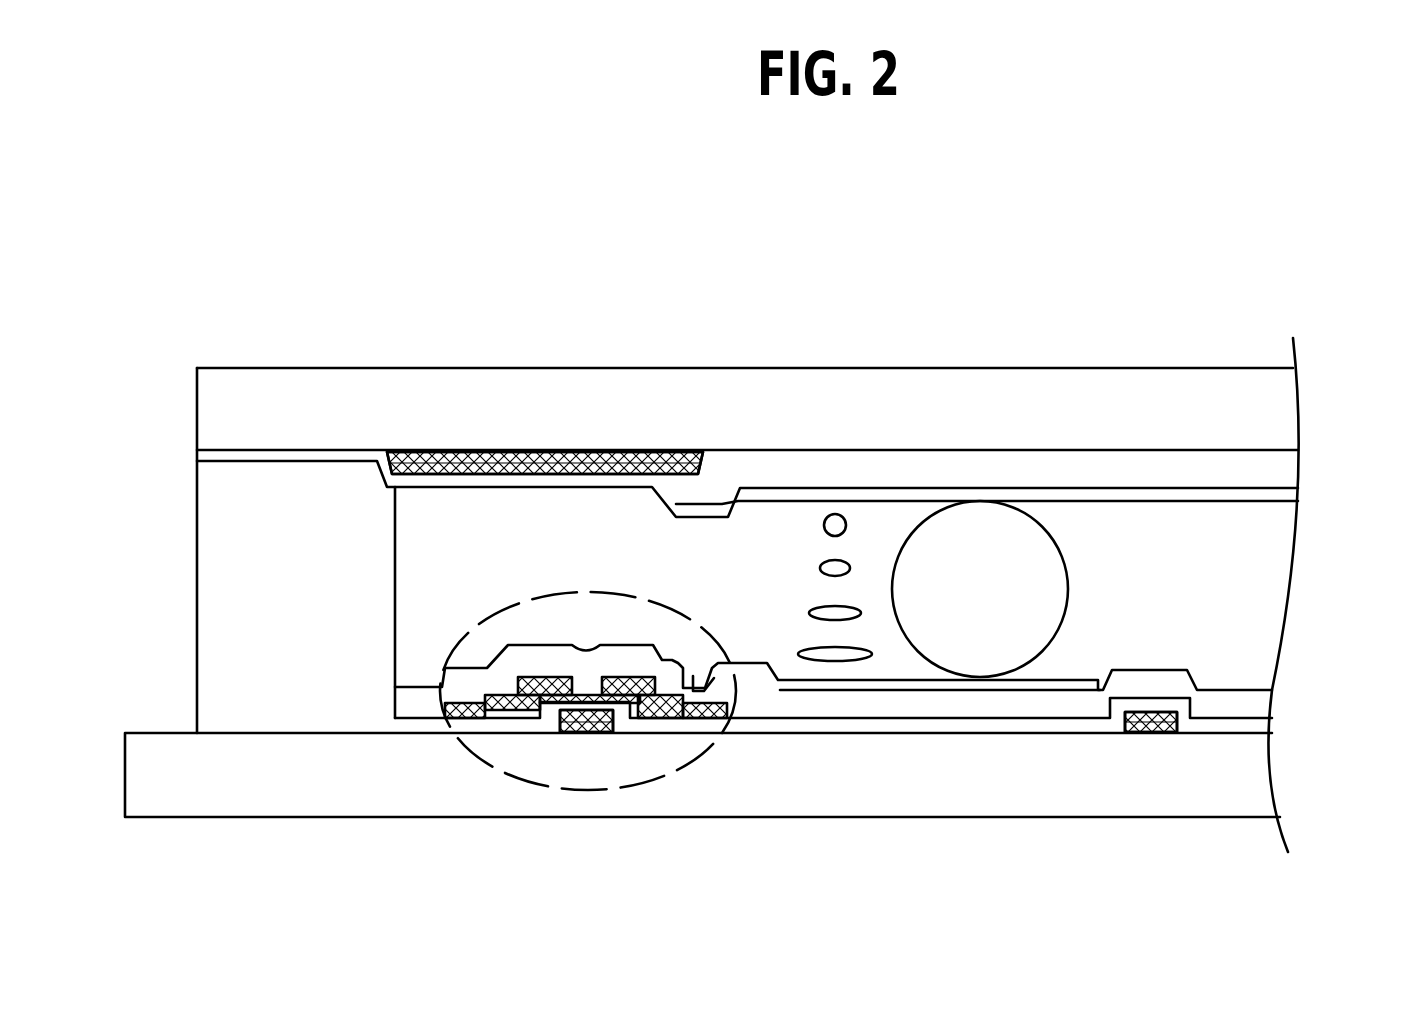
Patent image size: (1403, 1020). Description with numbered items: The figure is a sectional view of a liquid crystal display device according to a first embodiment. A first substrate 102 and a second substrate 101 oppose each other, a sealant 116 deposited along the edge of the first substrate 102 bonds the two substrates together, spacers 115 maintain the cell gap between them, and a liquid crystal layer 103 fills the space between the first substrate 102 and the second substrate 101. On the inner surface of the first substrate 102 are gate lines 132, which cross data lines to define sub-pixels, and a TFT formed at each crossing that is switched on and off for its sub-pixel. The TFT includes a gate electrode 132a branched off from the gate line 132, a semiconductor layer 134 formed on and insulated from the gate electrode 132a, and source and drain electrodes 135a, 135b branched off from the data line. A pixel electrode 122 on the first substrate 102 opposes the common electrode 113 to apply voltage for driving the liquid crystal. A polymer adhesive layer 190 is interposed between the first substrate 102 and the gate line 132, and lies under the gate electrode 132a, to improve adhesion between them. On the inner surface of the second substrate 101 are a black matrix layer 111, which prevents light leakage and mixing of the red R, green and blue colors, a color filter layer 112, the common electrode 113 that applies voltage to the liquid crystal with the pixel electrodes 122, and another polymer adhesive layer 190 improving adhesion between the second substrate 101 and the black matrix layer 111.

The second substrate 101 is at (1290, 408).
The first substrate 102 is at (1270, 772).
The liquid crystal layer 103 is at (1272, 603).
The black matrix layer 111 is at (522, 453).
The color filter layer 112 is at (1290, 462).
The common electrode 113 is at (1205, 493).
The spacer 115 is at (1067, 588).
The sealant 116 is at (210, 578).
The pixel electrode 122 is at (735, 670).
The gate line 132 is at (1130, 727).
The gate electrode 132a is at (573, 722).
The semiconductor layer 134 is at (500, 718).
The source electrode 135a is at (490, 700).
The drain electrode 135b is at (703, 720).
The polymer adhesive layer 190 is at (612, 453).
The thin film transistor TFT is at (545, 592).
The red color R is at (987, 469).